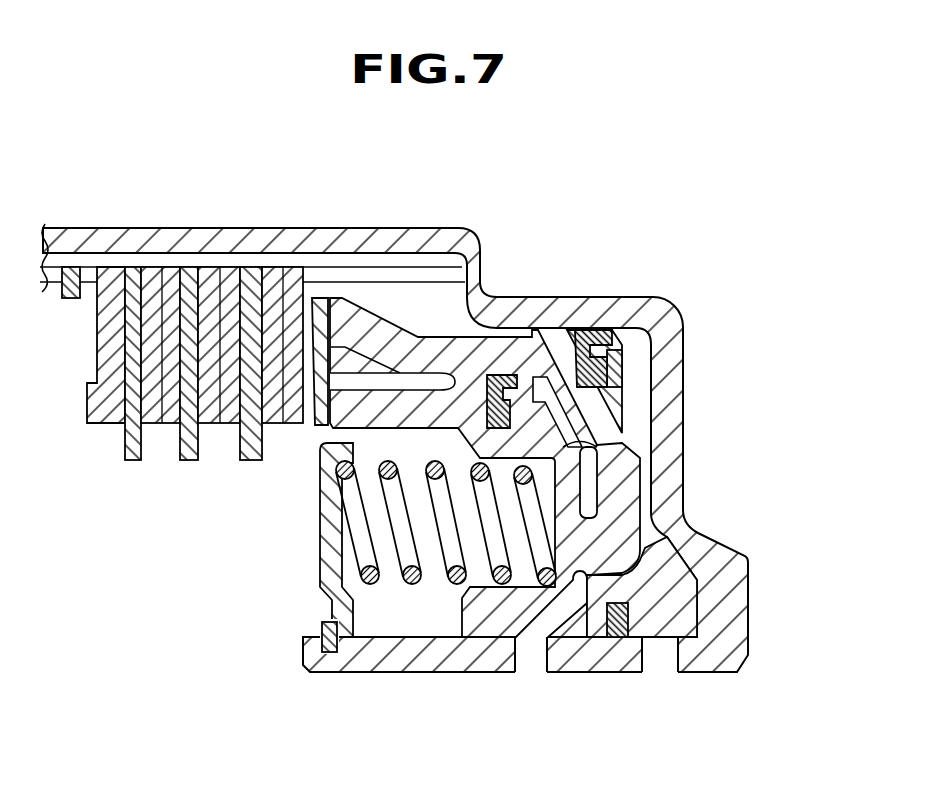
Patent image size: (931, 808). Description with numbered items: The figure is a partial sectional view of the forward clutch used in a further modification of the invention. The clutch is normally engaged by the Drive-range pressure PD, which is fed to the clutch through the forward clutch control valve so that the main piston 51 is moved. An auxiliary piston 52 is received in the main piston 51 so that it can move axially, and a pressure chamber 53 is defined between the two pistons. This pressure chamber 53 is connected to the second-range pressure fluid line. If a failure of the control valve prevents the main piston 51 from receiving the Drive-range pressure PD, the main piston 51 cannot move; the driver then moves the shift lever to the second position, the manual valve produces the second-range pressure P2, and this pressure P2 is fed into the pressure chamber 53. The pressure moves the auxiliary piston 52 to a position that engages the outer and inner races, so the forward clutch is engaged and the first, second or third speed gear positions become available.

The main piston 51 is at (613, 418).
The auxiliary piston 52 is at (598, 462).
The pressure chamber 53 is at (688, 523).
The 2'nd-range pressure P2 is at (530, 658).
The D-range pressure PD is at (660, 658).